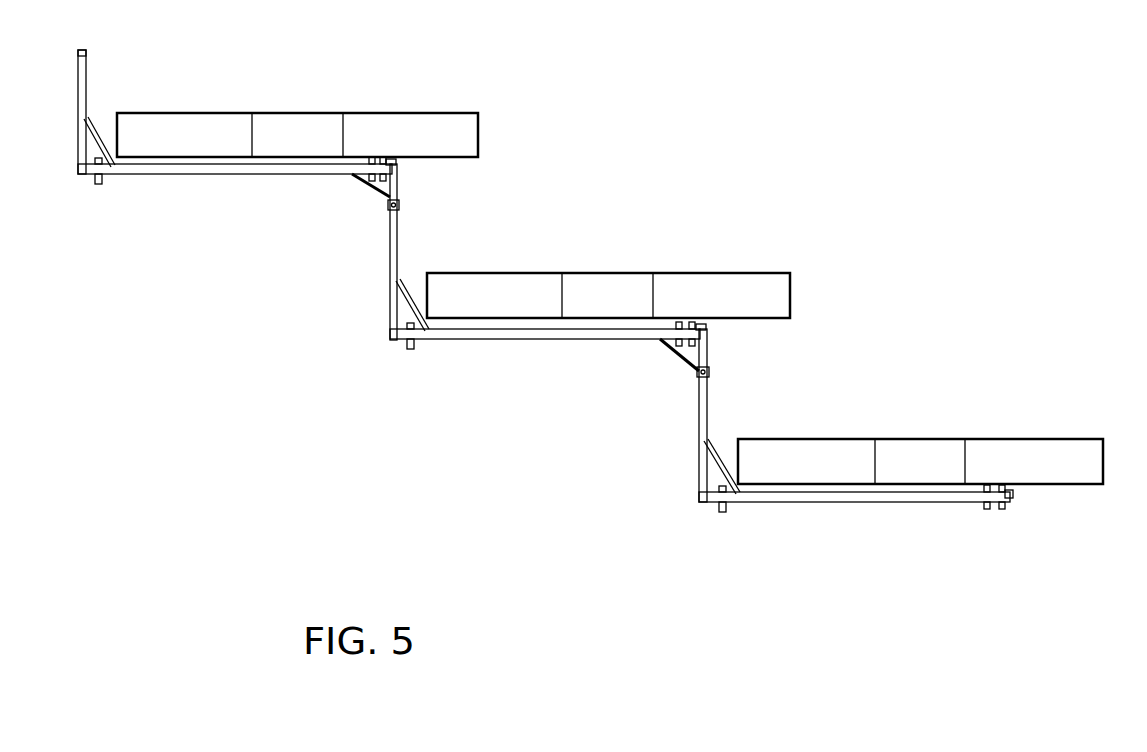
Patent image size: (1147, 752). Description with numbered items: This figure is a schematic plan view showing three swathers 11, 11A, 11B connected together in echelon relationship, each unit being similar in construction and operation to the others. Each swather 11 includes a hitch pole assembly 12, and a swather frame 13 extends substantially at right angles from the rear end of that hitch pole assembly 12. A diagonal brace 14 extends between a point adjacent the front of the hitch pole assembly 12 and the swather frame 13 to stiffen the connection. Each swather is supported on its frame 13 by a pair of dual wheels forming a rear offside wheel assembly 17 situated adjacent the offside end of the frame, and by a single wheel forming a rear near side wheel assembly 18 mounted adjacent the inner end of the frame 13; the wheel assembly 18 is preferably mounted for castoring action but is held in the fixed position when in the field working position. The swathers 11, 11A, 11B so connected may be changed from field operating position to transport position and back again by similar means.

The swather 11 is at (305, 112).
The swather 11A is at (597, 272).
The swather 11B is at (895, 438).
The hitch pole assembly 12 is at (87, 58).
The swather frame 13 is at (232, 175).
The diagonal brace 14 is at (88, 120).
The rear offside wheel assembly 17 is at (390, 161).
The rear near side wheel assembly 18 is at (100, 186).